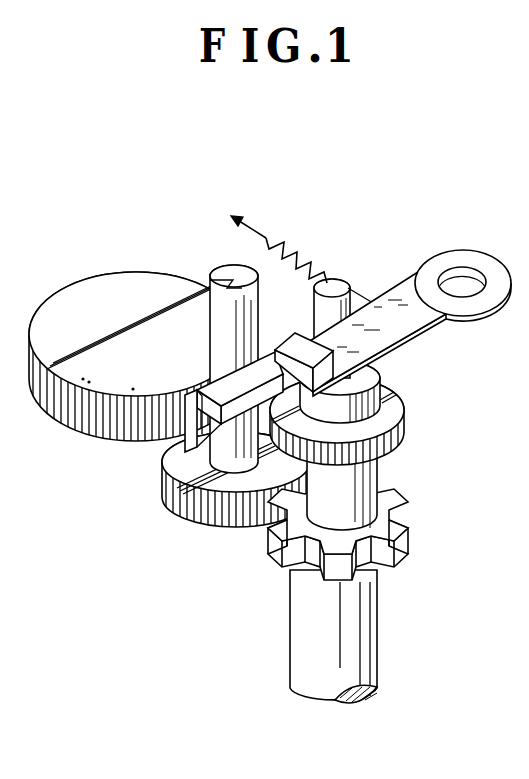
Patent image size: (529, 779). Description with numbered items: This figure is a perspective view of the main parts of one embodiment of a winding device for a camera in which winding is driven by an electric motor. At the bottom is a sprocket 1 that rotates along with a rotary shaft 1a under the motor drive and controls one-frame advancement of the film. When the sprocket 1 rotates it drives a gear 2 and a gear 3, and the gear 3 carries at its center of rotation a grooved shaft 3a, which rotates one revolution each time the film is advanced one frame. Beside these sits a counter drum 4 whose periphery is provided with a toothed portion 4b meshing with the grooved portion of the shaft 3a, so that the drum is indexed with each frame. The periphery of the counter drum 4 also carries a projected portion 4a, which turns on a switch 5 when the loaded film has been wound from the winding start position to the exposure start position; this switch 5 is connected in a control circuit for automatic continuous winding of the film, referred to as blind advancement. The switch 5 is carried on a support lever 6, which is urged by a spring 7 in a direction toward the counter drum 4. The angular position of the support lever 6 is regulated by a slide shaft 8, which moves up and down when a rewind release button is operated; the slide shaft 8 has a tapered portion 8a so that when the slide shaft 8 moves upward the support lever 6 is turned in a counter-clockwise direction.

The sprocket 1 is at (406, 476).
The rotary shaft 1a is at (372, 632).
The gear 2 is at (404, 432).
The gear 3 is at (233, 495).
The grooved shaft 3a is at (231, 267).
The counter drum 4 is at (93, 291).
The projected portion 4a is at (197, 395).
The toothed portion 4b is at (92, 425).
The switch 5 is at (270, 357).
The support lever 6 is at (446, 312).
The spring 7 is at (312, 265).
The slide shaft 8 is at (343, 283).
The tapered portion 8a is at (386, 388).